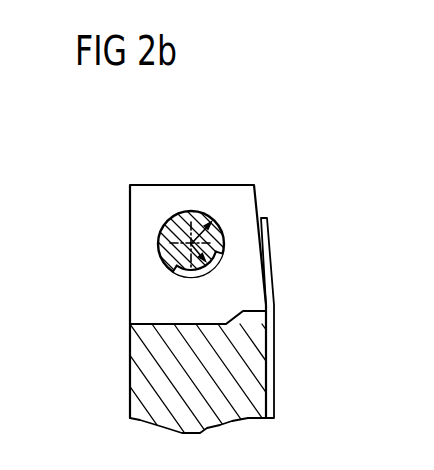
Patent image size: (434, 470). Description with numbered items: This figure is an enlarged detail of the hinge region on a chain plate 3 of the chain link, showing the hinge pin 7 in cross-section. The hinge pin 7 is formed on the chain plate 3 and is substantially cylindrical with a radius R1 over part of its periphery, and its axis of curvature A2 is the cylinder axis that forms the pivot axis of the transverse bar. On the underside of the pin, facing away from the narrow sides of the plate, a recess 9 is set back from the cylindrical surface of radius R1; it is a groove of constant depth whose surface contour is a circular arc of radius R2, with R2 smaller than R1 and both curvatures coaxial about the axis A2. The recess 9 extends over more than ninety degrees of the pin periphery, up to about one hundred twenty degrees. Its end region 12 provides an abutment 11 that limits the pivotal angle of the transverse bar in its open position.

The chain plate 3 is at (258, 370).
The hinge pin 7 is at (196, 215).
The recess 9 is at (168, 277).
The abutment 11 is at (133, 253).
The end region of the recess 12 is at (133, 270).
The axis of curvature of the pin A2 is at (163, 233).
The radius of the cylindrical surface of the pin R1 is at (215, 222).
The radius of the recess R2 is at (220, 250).